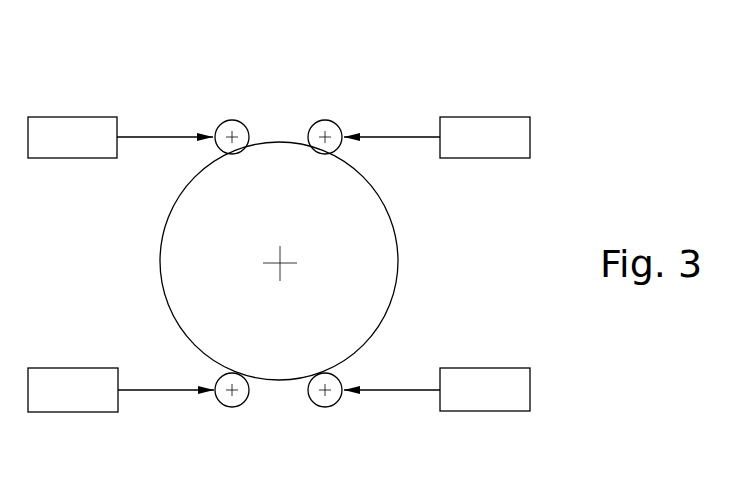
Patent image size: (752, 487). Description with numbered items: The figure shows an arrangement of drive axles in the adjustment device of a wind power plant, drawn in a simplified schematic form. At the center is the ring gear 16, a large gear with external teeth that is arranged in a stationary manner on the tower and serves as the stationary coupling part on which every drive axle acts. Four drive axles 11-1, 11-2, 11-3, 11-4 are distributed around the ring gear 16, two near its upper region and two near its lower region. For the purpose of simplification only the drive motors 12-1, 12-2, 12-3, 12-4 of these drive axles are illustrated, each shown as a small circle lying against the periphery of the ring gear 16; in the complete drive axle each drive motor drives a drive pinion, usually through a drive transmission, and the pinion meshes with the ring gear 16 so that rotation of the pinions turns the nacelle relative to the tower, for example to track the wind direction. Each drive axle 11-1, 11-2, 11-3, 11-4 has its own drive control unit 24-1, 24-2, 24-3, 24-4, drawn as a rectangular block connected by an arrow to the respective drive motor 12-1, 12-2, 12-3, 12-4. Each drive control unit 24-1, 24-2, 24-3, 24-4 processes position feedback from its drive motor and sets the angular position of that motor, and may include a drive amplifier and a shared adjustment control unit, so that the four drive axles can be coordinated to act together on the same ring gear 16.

The ring gear 16 is at (398, 267).
The drive motor 12-1 is at (230, 120).
The drive motor 12-2 is at (325, 120).
The drive motor 12-3 is at (327, 407).
The drive motor 12-4 is at (230, 407).
The drive axle 11-1 is at (213, 126).
The drive axle 11-2 is at (343, 125).
The drive axle 11-3 is at (343, 403).
The drive axle 11-4 is at (217, 403).
The drive control unit 24-1 is at (120, 137).
The drive control unit 24-2 is at (437, 137).
The drive control unit 24-3 is at (437, 389).
The drive control unit 24-4 is at (121, 390).